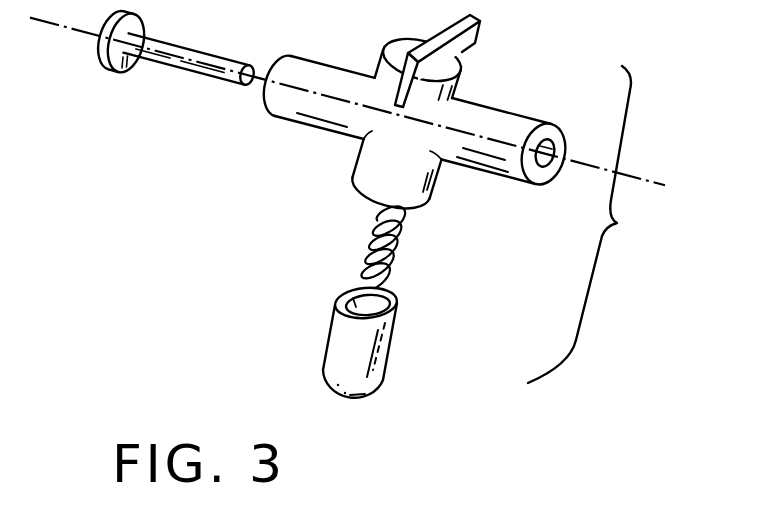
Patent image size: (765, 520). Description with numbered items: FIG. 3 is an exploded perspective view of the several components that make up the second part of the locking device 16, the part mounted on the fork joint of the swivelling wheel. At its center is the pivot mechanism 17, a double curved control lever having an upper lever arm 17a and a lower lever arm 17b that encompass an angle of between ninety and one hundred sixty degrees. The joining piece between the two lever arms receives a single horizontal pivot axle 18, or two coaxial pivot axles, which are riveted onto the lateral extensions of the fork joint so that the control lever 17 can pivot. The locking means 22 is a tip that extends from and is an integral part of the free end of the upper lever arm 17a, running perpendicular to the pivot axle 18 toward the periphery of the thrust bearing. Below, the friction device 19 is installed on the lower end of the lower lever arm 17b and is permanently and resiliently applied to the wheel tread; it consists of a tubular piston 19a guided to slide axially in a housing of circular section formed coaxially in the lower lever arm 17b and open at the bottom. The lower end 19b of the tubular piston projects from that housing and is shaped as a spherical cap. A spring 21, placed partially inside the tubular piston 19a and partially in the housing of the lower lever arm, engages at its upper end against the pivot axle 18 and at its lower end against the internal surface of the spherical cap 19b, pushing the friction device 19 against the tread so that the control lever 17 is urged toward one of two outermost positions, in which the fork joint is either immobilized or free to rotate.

The locking device 16 is at (593, 224).
The pivot mechanism 17 is at (360, 117).
The upper lever arm 17a is at (403, 50).
The lower lever arm 17b is at (377, 177).
The pivot axle 18 is at (180, 43).
The friction device 19 is at (361, 343).
The tubular piston 19a is at (378, 348).
The lower end of the tubular piston 19b is at (332, 393).
The spring 21 is at (403, 237).
The locking means 22 is at (480, 35).